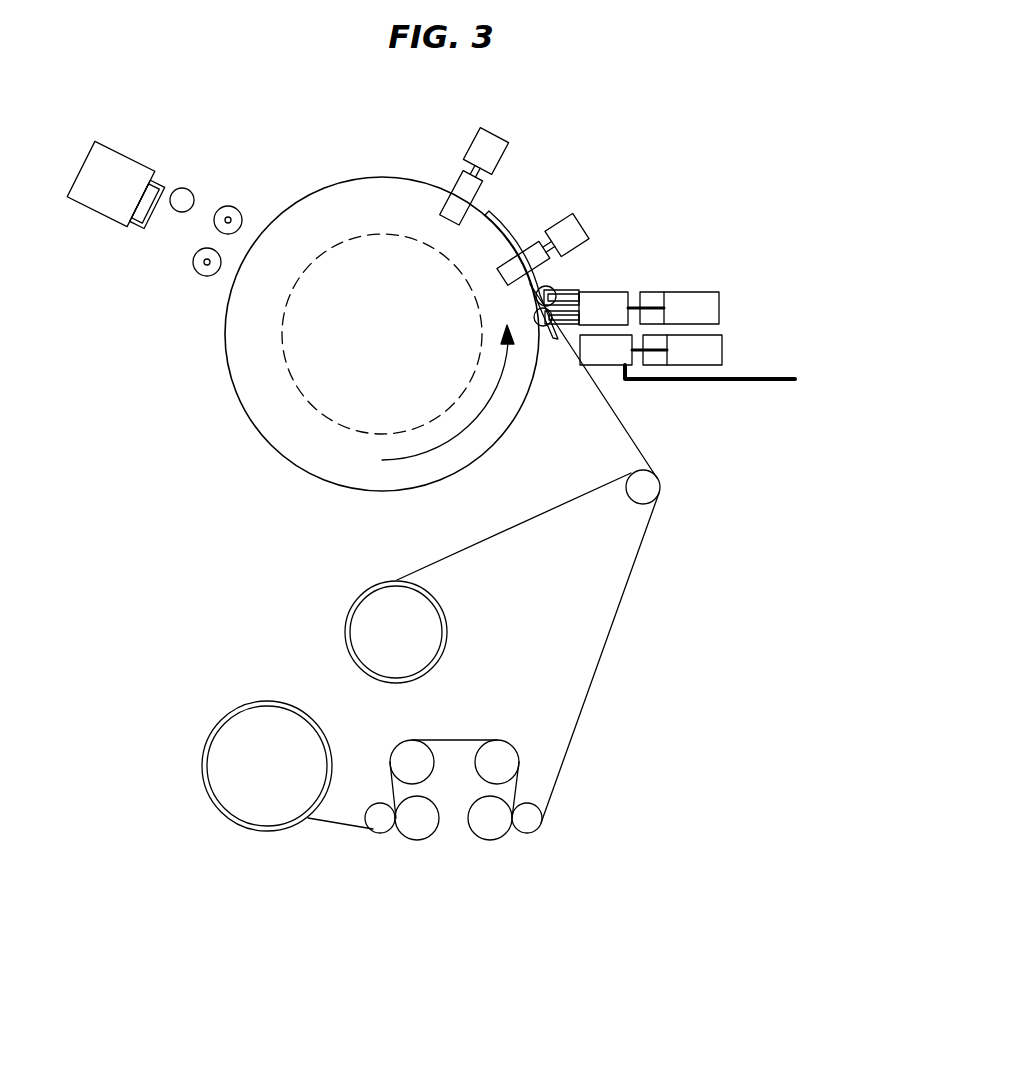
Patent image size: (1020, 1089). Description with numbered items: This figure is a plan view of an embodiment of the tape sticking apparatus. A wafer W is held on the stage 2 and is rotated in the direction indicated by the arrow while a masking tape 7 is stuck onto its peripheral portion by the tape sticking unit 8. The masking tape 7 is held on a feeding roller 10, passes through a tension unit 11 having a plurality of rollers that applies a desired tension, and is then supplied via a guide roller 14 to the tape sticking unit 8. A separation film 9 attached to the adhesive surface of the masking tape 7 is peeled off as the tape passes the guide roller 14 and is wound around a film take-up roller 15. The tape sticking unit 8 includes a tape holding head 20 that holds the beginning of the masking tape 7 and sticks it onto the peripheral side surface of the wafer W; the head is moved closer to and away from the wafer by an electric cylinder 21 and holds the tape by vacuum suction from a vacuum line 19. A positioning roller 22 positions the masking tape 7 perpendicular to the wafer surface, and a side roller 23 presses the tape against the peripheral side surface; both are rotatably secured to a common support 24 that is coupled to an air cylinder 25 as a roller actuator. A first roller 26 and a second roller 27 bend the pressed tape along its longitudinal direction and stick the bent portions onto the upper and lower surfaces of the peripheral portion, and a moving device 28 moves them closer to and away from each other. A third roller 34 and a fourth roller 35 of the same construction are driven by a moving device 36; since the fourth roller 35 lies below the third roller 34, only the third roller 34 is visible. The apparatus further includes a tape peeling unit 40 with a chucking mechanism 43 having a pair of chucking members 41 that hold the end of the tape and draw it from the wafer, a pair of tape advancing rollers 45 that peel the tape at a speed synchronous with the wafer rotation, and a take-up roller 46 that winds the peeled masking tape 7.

The stage 2 is at (294, 381).
The wafer W is at (327, 183).
The masking tape 7 is at (595, 670).
The tape sticking unit 8 is at (666, 298).
The separation film 9 is at (515, 526).
The feeding roller 10 is at (243, 705).
The tension unit 11 is at (453, 825).
The guide roller 14 is at (643, 488).
The film take-up roller 15 is at (355, 597).
The vacuum line 19 is at (737, 382).
The tape holding head 20 is at (600, 365).
The electric cylinder 21 is at (722, 349).
The positioning roller 22 is at (553, 342).
The side roller 23 is at (552, 287).
The support 24 is at (620, 292).
The air cylinder 25 is at (700, 292).
The first roller 26 is at (531, 227).
The second roller 27 is at (527, 247).
The moving device 28 is at (580, 218).
The third roller 34 is at (450, 167).
The fourth roller 35 is at (455, 187).
The moving device 36 is at (497, 138).
The tape peeling unit 40 is at (156, 229).
The chucking members 41 is at (157, 180).
The chucking mechanism 43 is at (122, 152).
The tape advancing rollers 45 is at (229, 206).
The take-up roller 46 is at (184, 188).